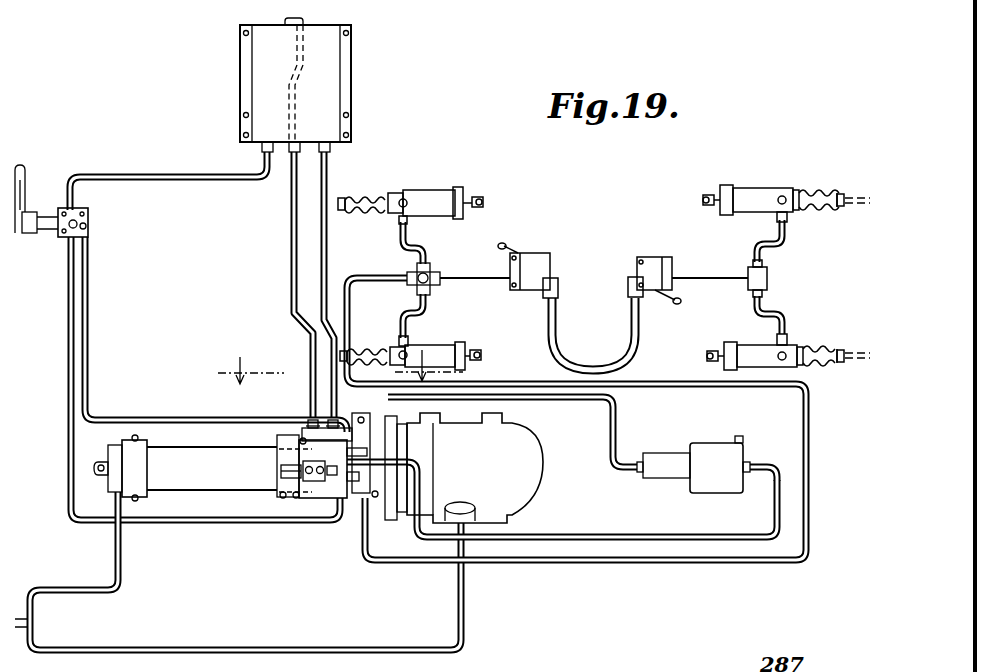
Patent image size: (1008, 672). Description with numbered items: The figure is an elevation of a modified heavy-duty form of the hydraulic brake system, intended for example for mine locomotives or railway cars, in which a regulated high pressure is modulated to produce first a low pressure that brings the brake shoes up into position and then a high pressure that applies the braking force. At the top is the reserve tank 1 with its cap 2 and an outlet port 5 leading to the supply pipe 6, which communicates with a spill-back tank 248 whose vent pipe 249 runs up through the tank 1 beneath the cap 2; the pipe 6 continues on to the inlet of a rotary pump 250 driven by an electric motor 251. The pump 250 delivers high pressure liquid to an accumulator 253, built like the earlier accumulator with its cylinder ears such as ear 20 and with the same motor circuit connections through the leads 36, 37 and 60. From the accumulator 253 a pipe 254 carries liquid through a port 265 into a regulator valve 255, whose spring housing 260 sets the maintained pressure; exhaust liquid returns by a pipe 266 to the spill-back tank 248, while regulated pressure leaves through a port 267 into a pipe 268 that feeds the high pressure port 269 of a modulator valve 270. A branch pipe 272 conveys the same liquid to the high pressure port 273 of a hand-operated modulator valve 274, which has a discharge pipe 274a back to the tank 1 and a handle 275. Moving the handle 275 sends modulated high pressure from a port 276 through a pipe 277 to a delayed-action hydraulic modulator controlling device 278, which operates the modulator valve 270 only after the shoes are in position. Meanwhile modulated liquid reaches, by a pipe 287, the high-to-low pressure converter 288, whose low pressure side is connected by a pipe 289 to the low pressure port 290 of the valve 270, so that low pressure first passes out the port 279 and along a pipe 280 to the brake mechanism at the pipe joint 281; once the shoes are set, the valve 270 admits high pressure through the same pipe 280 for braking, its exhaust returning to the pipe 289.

The reserve tank 1 is at (258, 88).
The cap 2 is at (303, 22).
The outlet port 5 is at (333, 150).
The supply pipe 6 is at (331, 260).
The ear 20 is at (340, 367).
The lead 36 is at (122, 586).
The lead 37 is at (116, 565).
The lead 60 is at (464, 630).
The spill-back tank 248 is at (311, 420).
The vent pipe 249 is at (294, 292).
The rotary pump 250 is at (275, 440).
The electric motor 251 is at (524, 441).
The accumulator 253 is at (172, 445).
The pipe 254 is at (576, 336).
The regulator valve 255 is at (281, 480).
The spring housing 260 is at (282, 464).
The port 265 is at (278, 442).
The pipe 266 is at (300, 492).
The port 267 is at (348, 424).
The pipe 268 is at (370, 453).
The high pressure port 269 is at (355, 466).
The modulator valve 270 is at (400, 420).
The pipe 272 is at (166, 524).
The high pressure port 273 is at (62, 240).
The hand-operated modulator valve 274 is at (85, 216).
The discharge pipe 274a is at (220, 180).
The handle 275 is at (27, 172).
The port 276 is at (90, 226).
The pipe 277 is at (86, 382).
The delayed-action hydraulic modulator controlling device 278 is at (407, 400).
The port 279 is at (357, 477).
The pipe 280 is at (487, 564).
The pipe joint 281 is at (432, 270).
The pipe 287 is at (612, 450).
The high-to-low pressure converter 288 is at (664, 462).
The pipe 289 is at (762, 466).
The low pressure port 290 is at (405, 445).